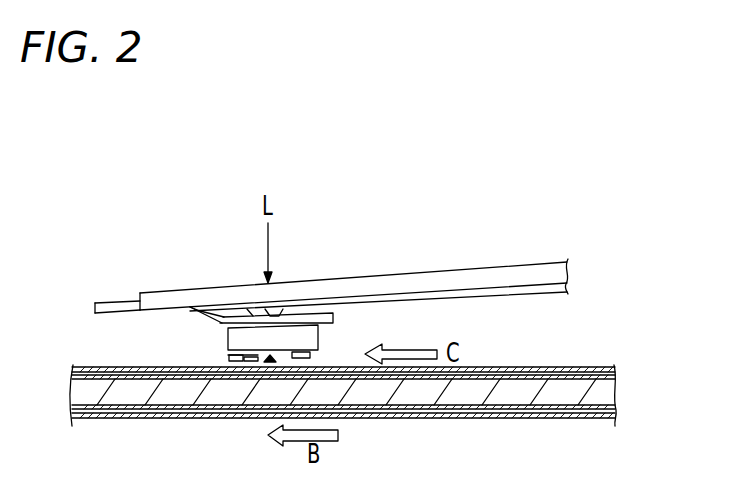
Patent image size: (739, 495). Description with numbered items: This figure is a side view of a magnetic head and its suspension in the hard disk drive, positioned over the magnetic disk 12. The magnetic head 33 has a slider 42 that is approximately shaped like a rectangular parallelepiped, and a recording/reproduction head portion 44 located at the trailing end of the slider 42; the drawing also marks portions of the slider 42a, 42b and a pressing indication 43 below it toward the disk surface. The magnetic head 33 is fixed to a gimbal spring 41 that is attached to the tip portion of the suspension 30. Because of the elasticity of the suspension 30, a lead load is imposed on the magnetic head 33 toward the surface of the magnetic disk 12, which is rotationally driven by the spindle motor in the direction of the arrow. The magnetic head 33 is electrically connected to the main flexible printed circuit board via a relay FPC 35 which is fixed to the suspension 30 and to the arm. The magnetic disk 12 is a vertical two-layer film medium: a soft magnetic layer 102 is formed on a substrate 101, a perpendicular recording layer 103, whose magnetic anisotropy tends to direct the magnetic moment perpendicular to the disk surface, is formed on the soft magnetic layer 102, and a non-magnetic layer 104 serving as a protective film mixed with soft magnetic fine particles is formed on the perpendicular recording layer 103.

The magnetic disk 12 is at (584, 356).
The suspension 30 is at (463, 282).
The magnetic head 33 is at (329, 345).
The relay FPC 35 is at (525, 290).
The gimbal spring 41 is at (323, 310).
The slider 42 is at (253, 333).
The upper portion of pressing block 42a is at (332, 328).
The lower portion of pressing block 42b is at (228, 341).
The pressing direction 43 is at (270, 363).
The recording/reproduction head portion 44 is at (228, 334).
The substrate 101 is at (520, 400).
The soft magnetic layer 102 is at (617, 375).
The perpendicular recording layer 103 is at (542, 368).
The non-magnetic layer 104 is at (603, 371).